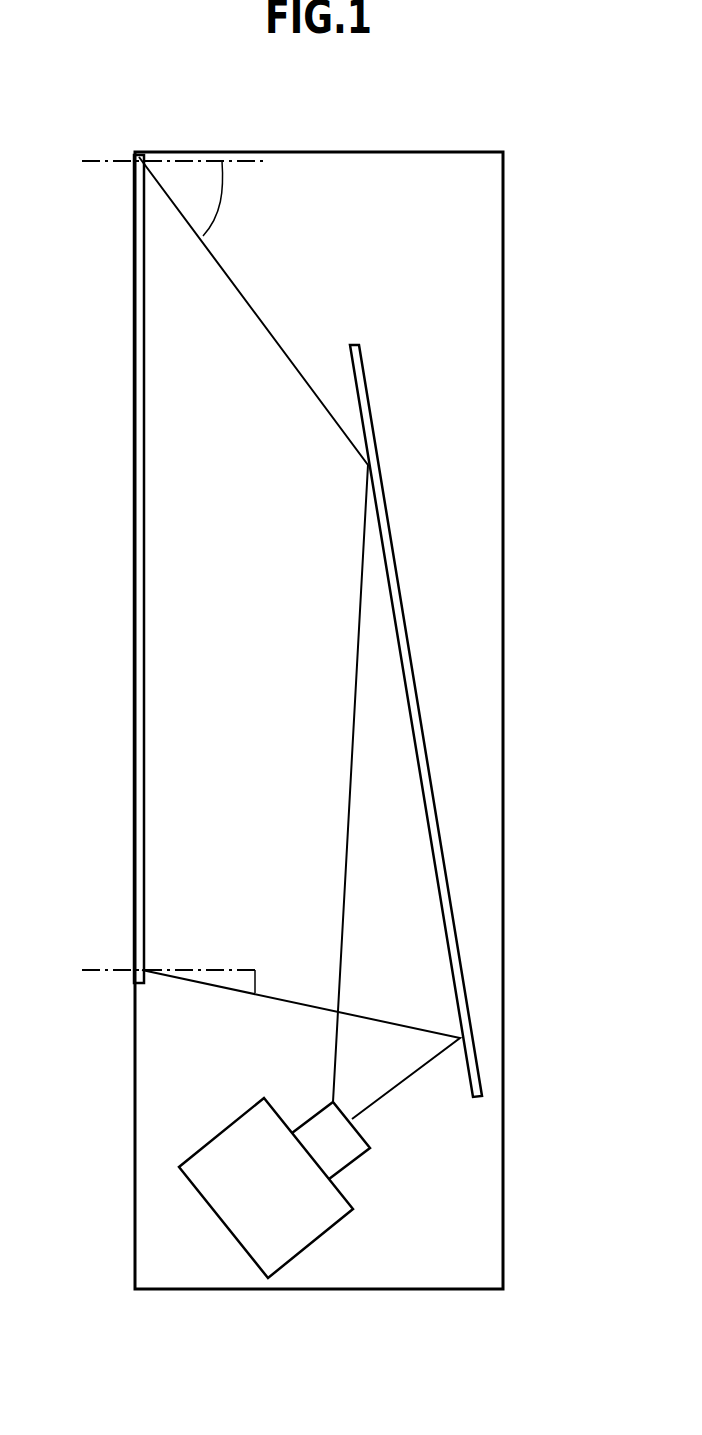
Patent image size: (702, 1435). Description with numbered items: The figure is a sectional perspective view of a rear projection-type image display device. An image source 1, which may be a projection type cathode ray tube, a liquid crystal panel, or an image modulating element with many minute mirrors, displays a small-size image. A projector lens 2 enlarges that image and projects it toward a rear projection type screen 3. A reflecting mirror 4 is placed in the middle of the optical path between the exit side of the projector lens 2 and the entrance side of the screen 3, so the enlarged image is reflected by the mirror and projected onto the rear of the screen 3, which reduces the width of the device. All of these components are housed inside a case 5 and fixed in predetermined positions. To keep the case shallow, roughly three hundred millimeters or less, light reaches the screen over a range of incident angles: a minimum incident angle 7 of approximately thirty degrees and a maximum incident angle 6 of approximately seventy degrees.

The image source 1 is at (200, 1148).
The projector lens 2 is at (365, 1133).
The rear projection type screen 3 is at (133, 447).
The reflecting mirror 4 is at (417, 693).
The case 5 is at (503, 379).
The maximum incident angle 6 is at (172, 198).
The minimum incident angle 7 is at (180, 964).